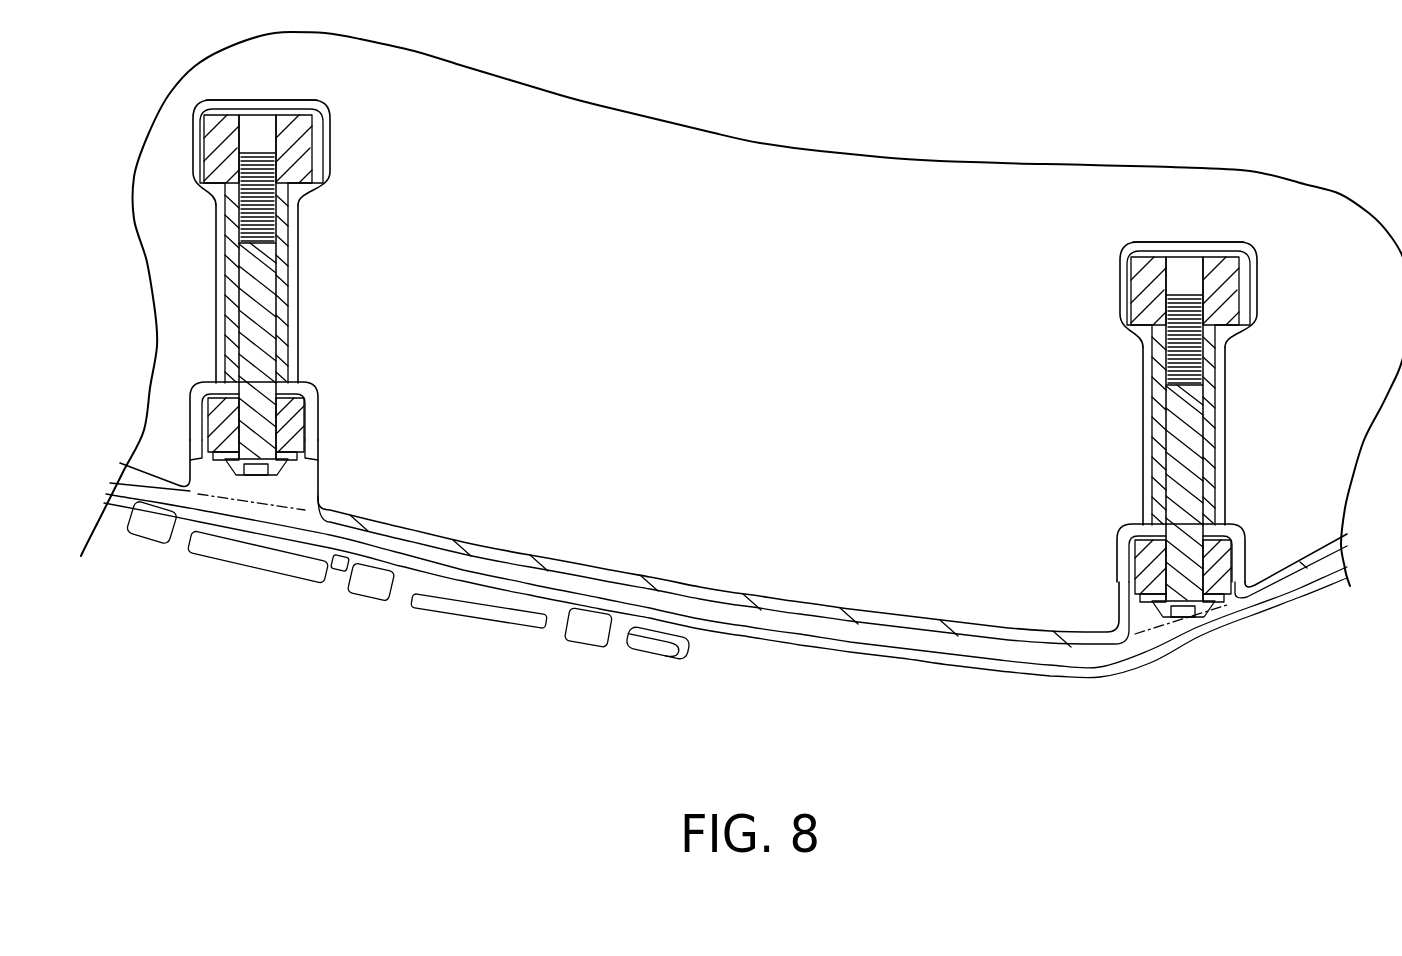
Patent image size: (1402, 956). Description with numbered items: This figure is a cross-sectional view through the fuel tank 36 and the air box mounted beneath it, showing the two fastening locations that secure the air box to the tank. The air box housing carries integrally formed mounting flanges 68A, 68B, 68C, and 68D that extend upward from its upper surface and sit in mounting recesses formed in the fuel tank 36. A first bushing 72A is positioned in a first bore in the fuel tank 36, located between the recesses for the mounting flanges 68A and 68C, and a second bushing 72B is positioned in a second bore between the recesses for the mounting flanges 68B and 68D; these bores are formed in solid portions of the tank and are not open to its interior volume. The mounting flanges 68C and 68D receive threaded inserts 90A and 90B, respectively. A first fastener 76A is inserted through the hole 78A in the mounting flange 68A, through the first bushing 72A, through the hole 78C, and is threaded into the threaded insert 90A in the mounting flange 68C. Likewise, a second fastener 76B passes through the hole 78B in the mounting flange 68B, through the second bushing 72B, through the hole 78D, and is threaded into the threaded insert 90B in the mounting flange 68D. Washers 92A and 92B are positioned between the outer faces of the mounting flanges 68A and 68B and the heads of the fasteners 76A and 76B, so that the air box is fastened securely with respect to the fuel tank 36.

The fuel tank 36 is at (512, 562).
The mounting flange 68A is at (283, 425).
The mounting flange 68B is at (1213, 537).
The mounting flange 68C is at (223, 150).
The mounting flange 68D is at (1225, 320).
The first bushing 72A is at (286, 226).
The second bushing 72B is at (1152, 373).
The first fastener 76A is at (255, 313).
The second fastener 76B is at (1171, 452).
The hole 78A is at (233, 427).
The hole 78B is at (1148, 568).
The hole 78C is at (284, 146).
The hole 78D is at (1210, 292).
The threaded insert 90A is at (242, 116).
The threaded insert 90B is at (1192, 262).
The washer 92A is at (300, 465).
The washer 92B is at (1218, 600).